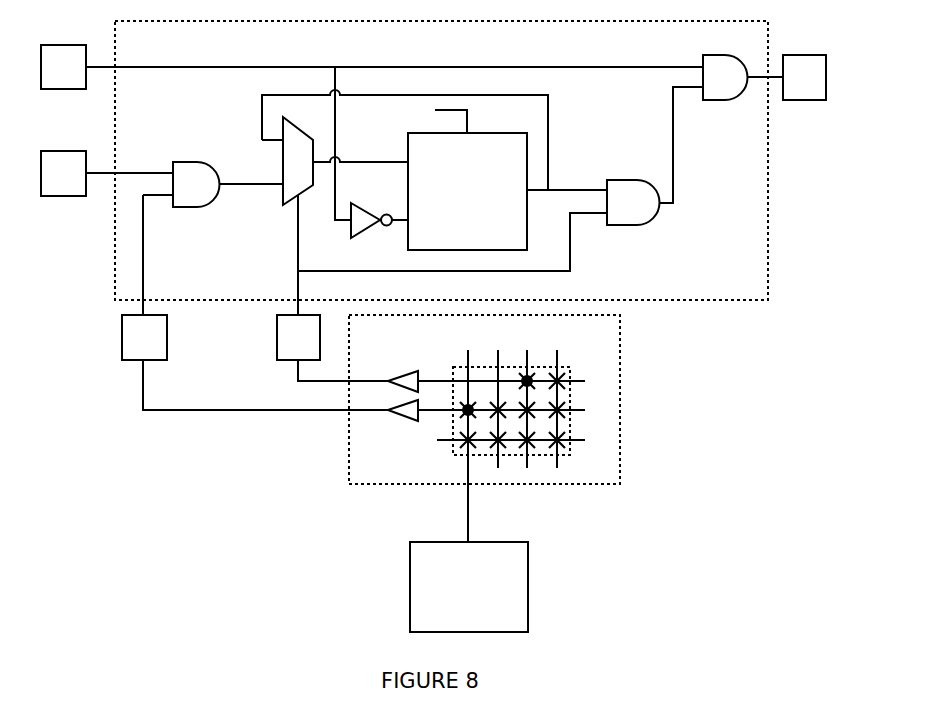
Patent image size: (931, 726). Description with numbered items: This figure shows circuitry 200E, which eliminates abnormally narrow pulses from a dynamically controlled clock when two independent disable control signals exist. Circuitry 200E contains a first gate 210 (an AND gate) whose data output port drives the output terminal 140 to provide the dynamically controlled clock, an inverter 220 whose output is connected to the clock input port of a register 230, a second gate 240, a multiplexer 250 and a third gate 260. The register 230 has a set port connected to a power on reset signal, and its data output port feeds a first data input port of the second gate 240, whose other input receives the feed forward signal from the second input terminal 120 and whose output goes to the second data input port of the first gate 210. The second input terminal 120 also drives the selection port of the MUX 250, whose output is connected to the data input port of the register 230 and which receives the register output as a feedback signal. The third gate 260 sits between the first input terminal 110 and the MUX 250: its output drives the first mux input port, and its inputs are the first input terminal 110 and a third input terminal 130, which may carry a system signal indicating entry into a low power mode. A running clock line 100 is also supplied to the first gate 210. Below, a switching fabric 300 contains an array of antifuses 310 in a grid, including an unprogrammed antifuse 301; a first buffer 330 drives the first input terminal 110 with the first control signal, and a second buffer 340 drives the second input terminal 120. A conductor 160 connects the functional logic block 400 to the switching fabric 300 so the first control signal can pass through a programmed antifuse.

The first input signal 100 is at (46, 77).
The third input terminal 130 is at (46, 183).
The output terminal 140 is at (787, 87).
The first input terminal 110 is at (127, 347).
The second input terminal 120 is at (281, 347).
The circuitry 200E is at (167, 51).
The first gate 210 is at (708, 87).
The inverter 220 is at (363, 236).
The register 230 is at (451, 199).
The second gate 240 is at (620, 212).
The multiplexer 250 is at (283, 152).
The third gate 260 is at (177, 194).
The switching fabric 300 is at (389, 343).
The unprogrammed antifuse 301 is at (567, 367).
The array of antifuses 310 is at (452, 446).
The first buffer 330 is at (404, 419).
The second buffer 340 is at (412, 372).
The conductor 160 is at (466, 491).
The functional logic block 400 is at (452, 617).